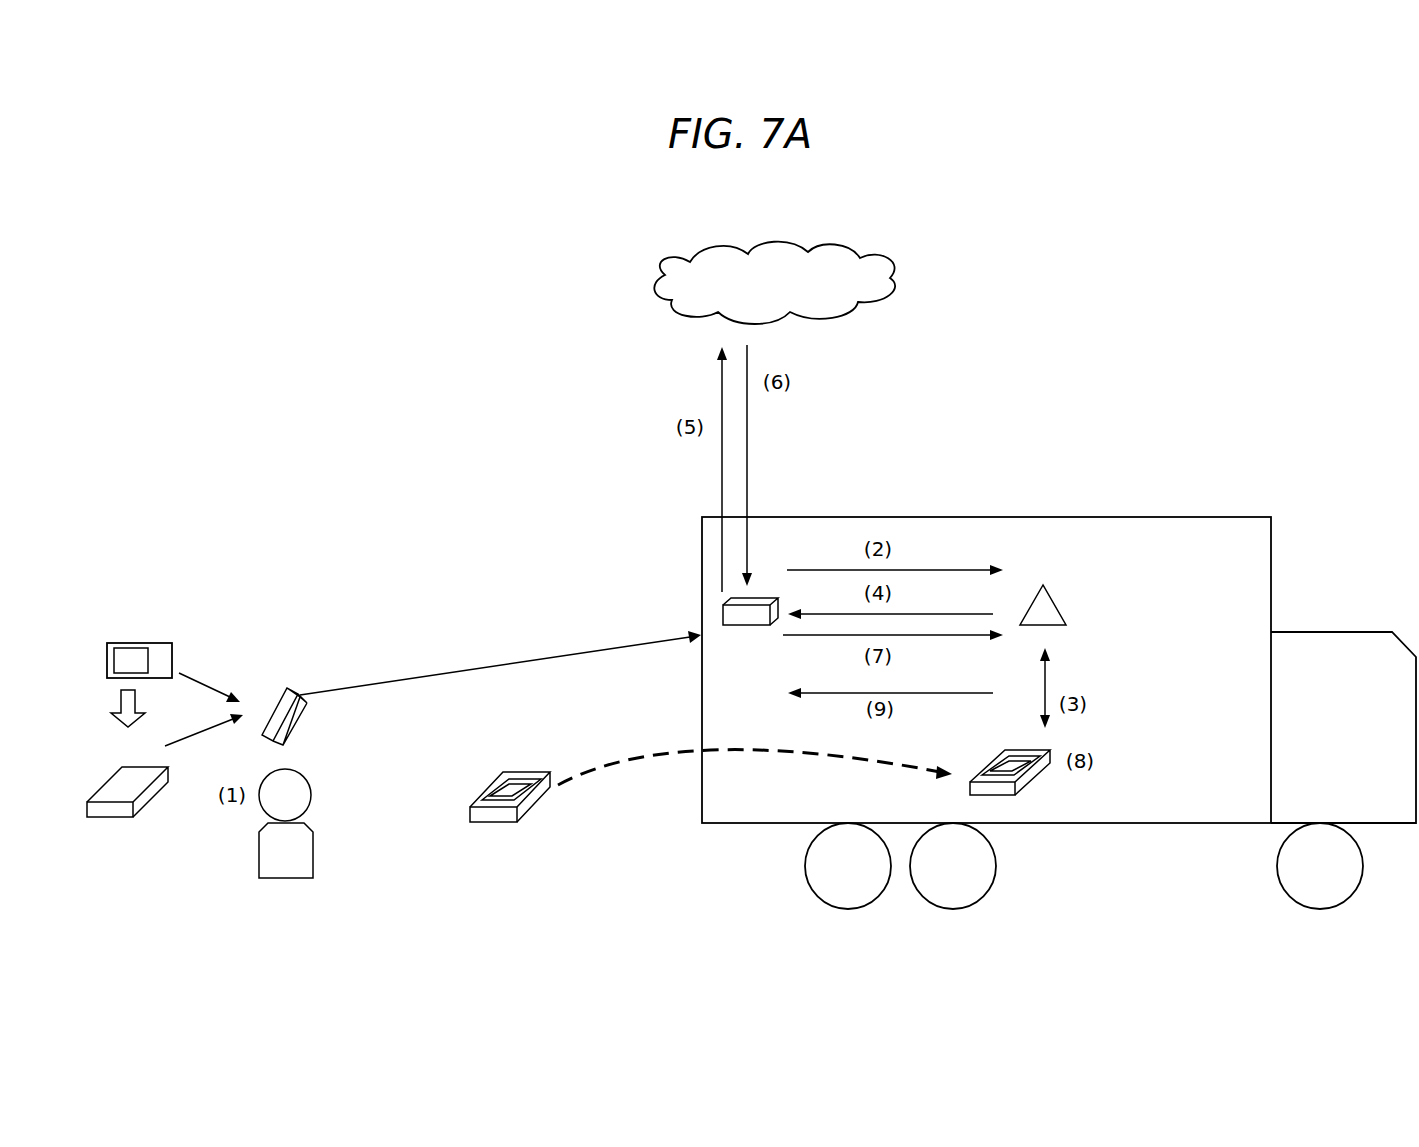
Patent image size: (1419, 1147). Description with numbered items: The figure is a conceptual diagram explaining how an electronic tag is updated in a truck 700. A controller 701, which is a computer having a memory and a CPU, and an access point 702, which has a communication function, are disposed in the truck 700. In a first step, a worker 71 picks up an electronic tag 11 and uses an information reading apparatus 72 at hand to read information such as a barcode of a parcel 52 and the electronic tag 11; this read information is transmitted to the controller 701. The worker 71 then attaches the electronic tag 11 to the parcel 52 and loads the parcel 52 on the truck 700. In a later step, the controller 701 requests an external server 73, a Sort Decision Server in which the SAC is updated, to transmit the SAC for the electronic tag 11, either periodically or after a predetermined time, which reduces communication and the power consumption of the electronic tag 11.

The external server 73 is at (774, 252).
The truck 700 is at (1381, 632).
The controller 701 is at (740, 626).
The access point 702 is at (1067, 617).
The electronic tag 11 is at (143, 640).
The information reading apparatus 72 is at (285, 690).
The parcel 52 is at (150, 802).
The worker 71 is at (296, 879).